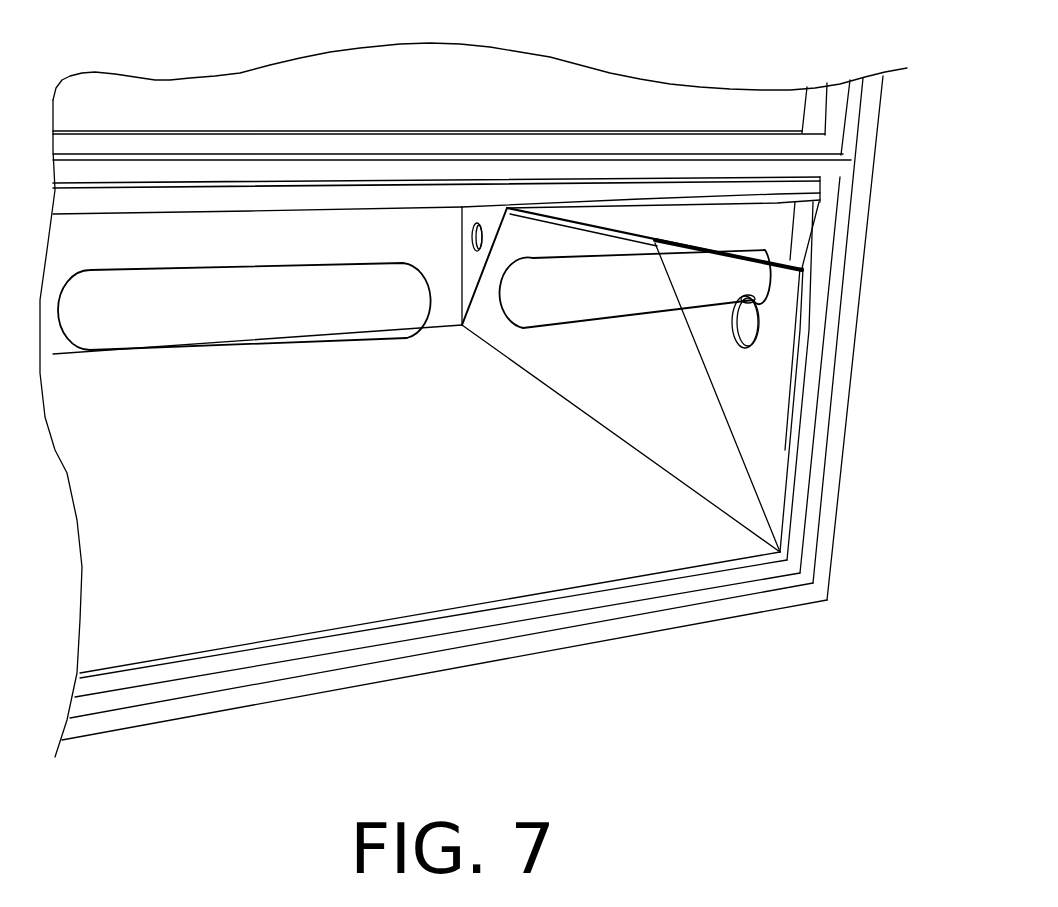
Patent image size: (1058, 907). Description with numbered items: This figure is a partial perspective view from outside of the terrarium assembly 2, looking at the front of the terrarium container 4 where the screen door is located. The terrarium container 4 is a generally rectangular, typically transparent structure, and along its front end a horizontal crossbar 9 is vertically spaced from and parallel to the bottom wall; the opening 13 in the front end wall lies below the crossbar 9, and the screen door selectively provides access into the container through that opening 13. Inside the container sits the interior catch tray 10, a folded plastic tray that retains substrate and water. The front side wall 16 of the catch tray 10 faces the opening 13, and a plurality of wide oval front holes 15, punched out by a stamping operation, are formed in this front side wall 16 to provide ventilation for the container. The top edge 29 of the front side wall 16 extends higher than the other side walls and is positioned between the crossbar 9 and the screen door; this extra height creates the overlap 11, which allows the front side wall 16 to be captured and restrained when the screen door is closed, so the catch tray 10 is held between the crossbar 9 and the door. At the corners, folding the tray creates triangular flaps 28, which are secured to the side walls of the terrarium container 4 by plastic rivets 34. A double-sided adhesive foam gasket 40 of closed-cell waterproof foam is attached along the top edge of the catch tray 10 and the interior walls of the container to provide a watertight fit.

The terrarium assembly 2 is at (742, 74).
The terrarium container 4 is at (838, 479).
The crossbar 9 is at (250, 173).
The interior catch tray 10 is at (697, 421).
The overlap 11 is at (818, 187).
The opening 13 is at (315, 633).
The front holes 15 is at (375, 340).
The front side wall 16 is at (513, 517).
The triangular flaps 28 is at (477, 302).
The top edge 29 is at (331, 197).
The rivets 34 is at (472, 231).
The adhesive foam gasket 40 is at (648, 240).